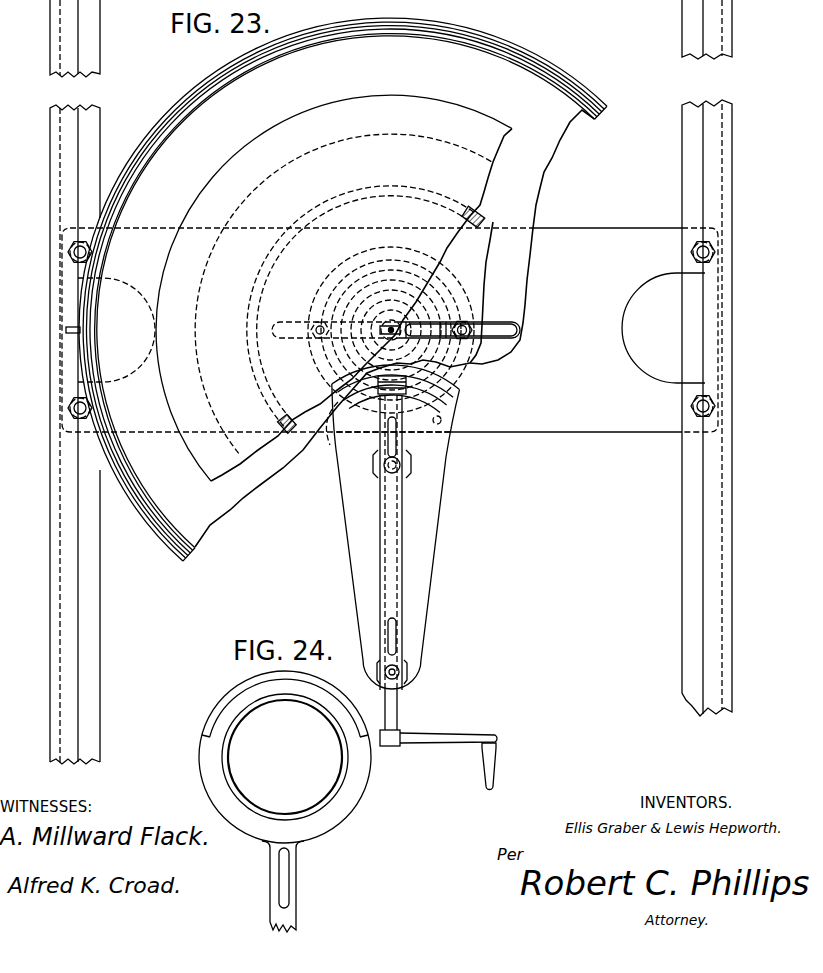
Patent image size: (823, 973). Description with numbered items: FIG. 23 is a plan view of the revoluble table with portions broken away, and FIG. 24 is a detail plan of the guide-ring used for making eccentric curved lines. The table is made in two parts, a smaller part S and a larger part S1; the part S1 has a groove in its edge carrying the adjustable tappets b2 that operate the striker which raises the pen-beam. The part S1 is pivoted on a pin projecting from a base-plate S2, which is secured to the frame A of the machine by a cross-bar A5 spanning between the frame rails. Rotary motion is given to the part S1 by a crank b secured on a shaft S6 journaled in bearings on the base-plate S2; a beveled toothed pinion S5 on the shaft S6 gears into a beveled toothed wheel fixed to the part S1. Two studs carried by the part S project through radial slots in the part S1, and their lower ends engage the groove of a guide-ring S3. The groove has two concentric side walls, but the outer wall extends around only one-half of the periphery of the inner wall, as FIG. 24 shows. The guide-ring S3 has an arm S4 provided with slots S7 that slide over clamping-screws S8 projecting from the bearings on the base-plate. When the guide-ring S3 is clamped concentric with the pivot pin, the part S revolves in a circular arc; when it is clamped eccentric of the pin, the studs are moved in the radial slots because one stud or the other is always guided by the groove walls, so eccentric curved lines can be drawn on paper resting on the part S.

In FIG. 23, the table part S is at (334, 288).
In FIG. 23, the table part S1 is at (492, 312).
In FIG. 23, the base-plate S2 is at (300, 330).
In FIG. 23, the guide-ring S3 is at (422, 370).
In FIG. 24, the guide-ring S3 is at (212, 785).
In FIG. 23, the arm of the guide-ring S4 is at (435, 382).
In FIG. 24, the arm of the guide-ring S4 is at (212, 727).
In FIG. 23, the beveled toothed pinion S5 is at (337, 432).
In FIG. 23, the shaft S6 is at (392, 394).
In FIG. 23, the slots S7 is at (397, 448).
In FIG. 24, the slots S7 is at (288, 880).
In FIG. 23, the clamping-screws S8 is at (400, 465).
In FIG. 23, the frame A is at (391, 382).
In FIG. 23, the cross-bar A5 is at (390, 330).
In FIG. 23, the crank b is at (448, 742).
In FIG. 23, the adjustable tappets b2 is at (96, 333).